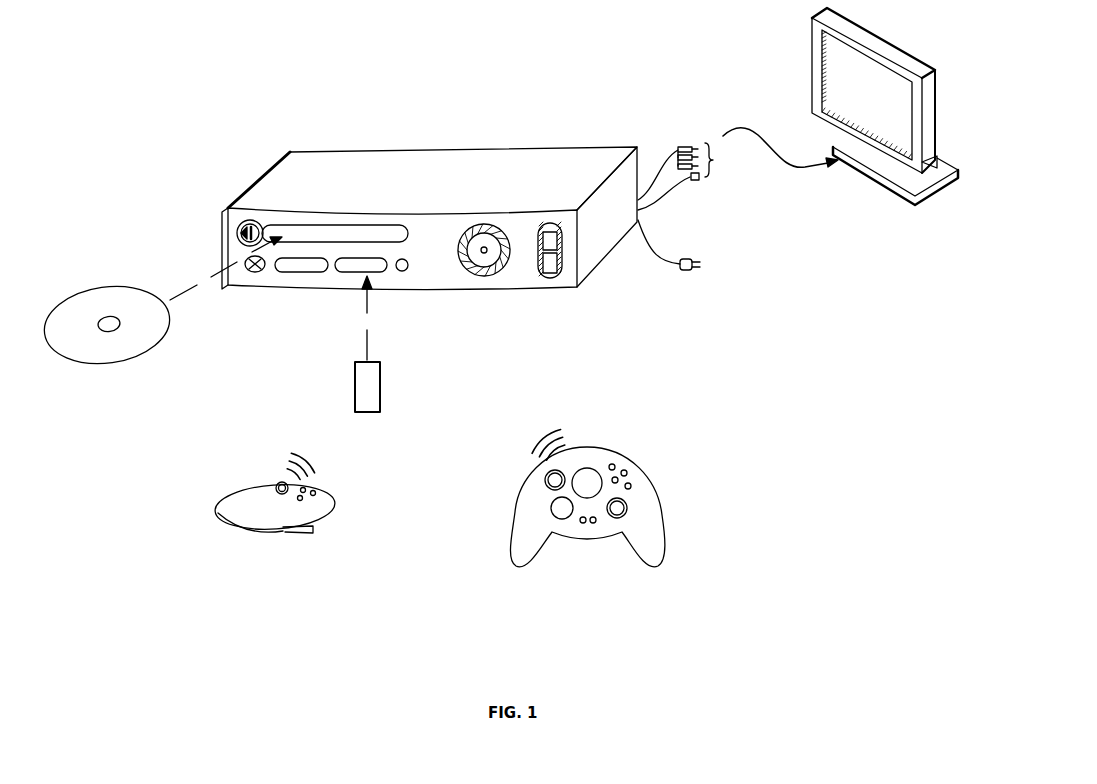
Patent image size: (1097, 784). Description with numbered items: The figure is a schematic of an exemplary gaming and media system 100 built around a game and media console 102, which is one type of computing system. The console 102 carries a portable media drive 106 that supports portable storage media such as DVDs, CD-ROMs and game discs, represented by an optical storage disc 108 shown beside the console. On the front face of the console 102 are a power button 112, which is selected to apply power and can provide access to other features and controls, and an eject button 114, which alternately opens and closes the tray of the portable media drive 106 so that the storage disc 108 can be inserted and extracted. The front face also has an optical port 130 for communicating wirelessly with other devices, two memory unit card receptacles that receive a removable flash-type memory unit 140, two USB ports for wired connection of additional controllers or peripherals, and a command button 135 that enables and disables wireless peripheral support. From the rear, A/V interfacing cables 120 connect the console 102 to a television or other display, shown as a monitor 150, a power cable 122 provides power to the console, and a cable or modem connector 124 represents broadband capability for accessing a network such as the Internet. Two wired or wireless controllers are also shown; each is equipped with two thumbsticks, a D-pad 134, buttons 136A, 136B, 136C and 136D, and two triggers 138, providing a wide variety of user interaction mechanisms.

The gaming and media system 100 is at (452, 119).
The game and media console 102 is at (325, 157).
The portable media drive 106 is at (343, 224).
The optical storage disc 108 is at (118, 363).
The power button 112 is at (485, 279).
The eject button 114 is at (247, 233).
The A/V interfacing cables 120 is at (680, 148).
The power cable 122 is at (680, 266).
The cable or modem connector 124 is at (697, 182).
The optical port 130 is at (255, 273).
The D-pad 134 is at (551, 508).
The command button 135 is at (402, 273).
The button 136A is at (627, 473).
The button 136B is at (613, 464).
The button 136C is at (632, 487).
The button 136D is at (613, 477).
The trigger 138 is at (310, 540).
The removable flash-type memory unit 140 is at (368, 412).
The monitor 150 is at (812, 70).